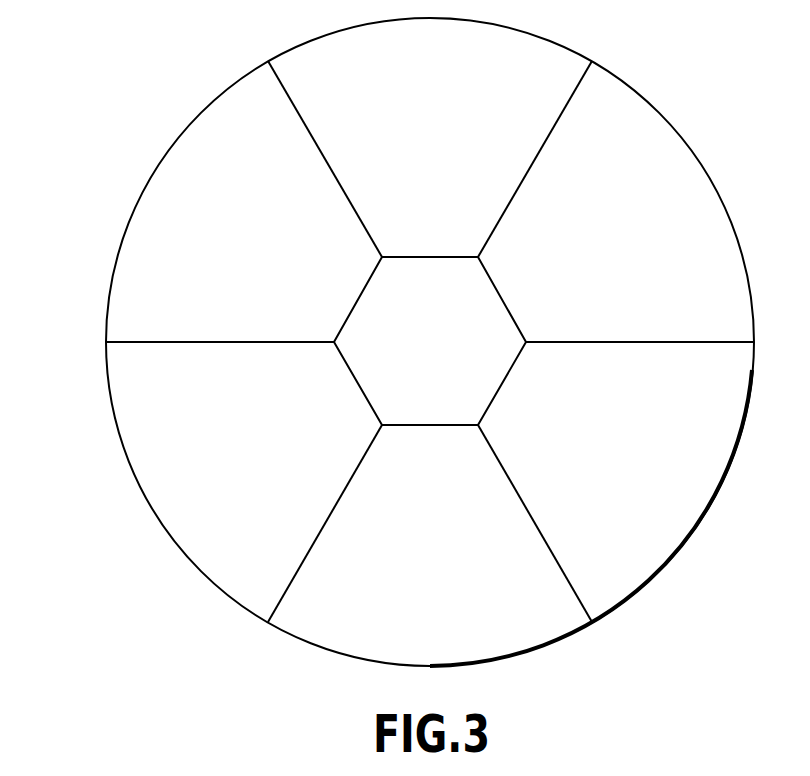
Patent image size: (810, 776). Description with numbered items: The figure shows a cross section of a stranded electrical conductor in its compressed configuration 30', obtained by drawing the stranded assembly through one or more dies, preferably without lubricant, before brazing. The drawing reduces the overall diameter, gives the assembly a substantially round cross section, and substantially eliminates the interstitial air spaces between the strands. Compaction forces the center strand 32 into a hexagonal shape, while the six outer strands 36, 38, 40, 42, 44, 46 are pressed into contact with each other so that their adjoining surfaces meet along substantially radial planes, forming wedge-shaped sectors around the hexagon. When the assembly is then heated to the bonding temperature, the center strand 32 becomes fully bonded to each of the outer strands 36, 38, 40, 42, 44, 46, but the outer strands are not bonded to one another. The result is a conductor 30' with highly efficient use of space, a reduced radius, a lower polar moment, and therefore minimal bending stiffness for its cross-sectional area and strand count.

The compressed configuration of conductor 30' is at (398, 342).
The center strand 32 is at (444, 353).
The outer strand 36 is at (260, 455).
The outer strand 38 is at (258, 252).
The outer strand 40 is at (443, 155).
The outer strand 42 is at (628, 250).
The outer strand 44 is at (634, 460).
The outer strand 46 is at (444, 570).